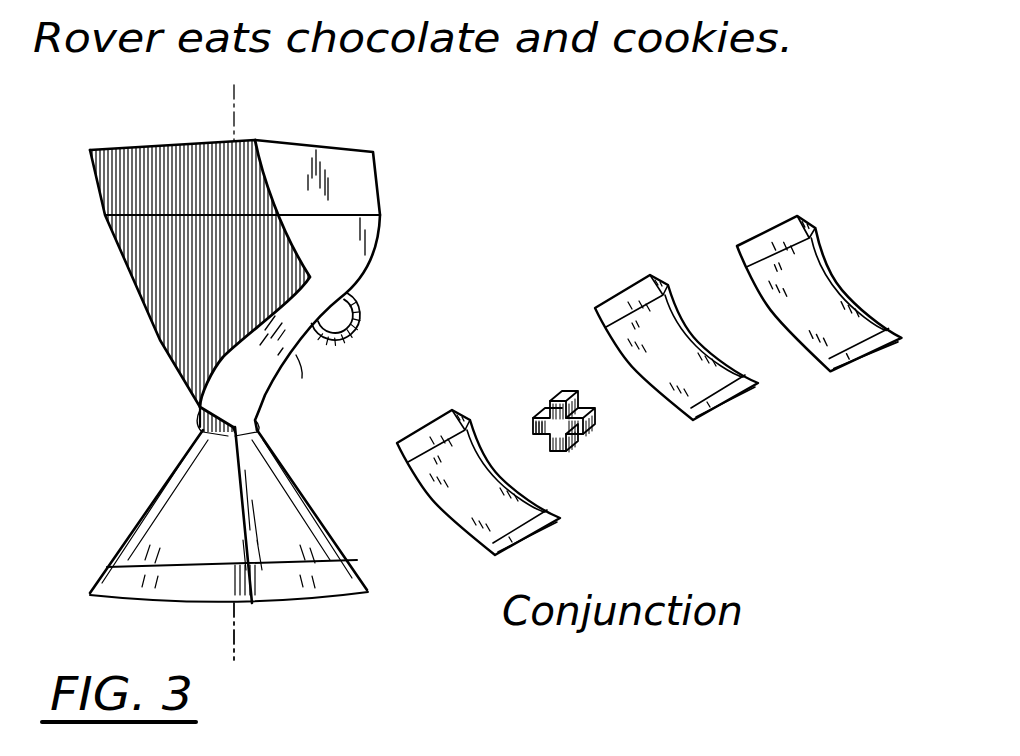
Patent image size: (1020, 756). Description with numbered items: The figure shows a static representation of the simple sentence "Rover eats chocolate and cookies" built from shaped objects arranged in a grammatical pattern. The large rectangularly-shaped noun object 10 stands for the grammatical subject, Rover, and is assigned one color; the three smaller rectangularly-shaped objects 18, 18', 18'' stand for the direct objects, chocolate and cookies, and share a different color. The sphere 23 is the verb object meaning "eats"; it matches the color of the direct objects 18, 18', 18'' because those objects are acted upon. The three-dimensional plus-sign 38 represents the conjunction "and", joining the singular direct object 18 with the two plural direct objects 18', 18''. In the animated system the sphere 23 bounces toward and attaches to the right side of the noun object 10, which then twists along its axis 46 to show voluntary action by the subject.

The noun object 10 is at (416, 139).
The sphere 23 is at (391, 282).
The axis 46 is at (236, 631).
The rectangularly-shaped object 18 is at (478, 438).
The rectangularly-shaped object 18' is at (676, 305).
The rectangularly-shaped object 18'' is at (819, 243).
The plus-sign 38 is at (606, 453).